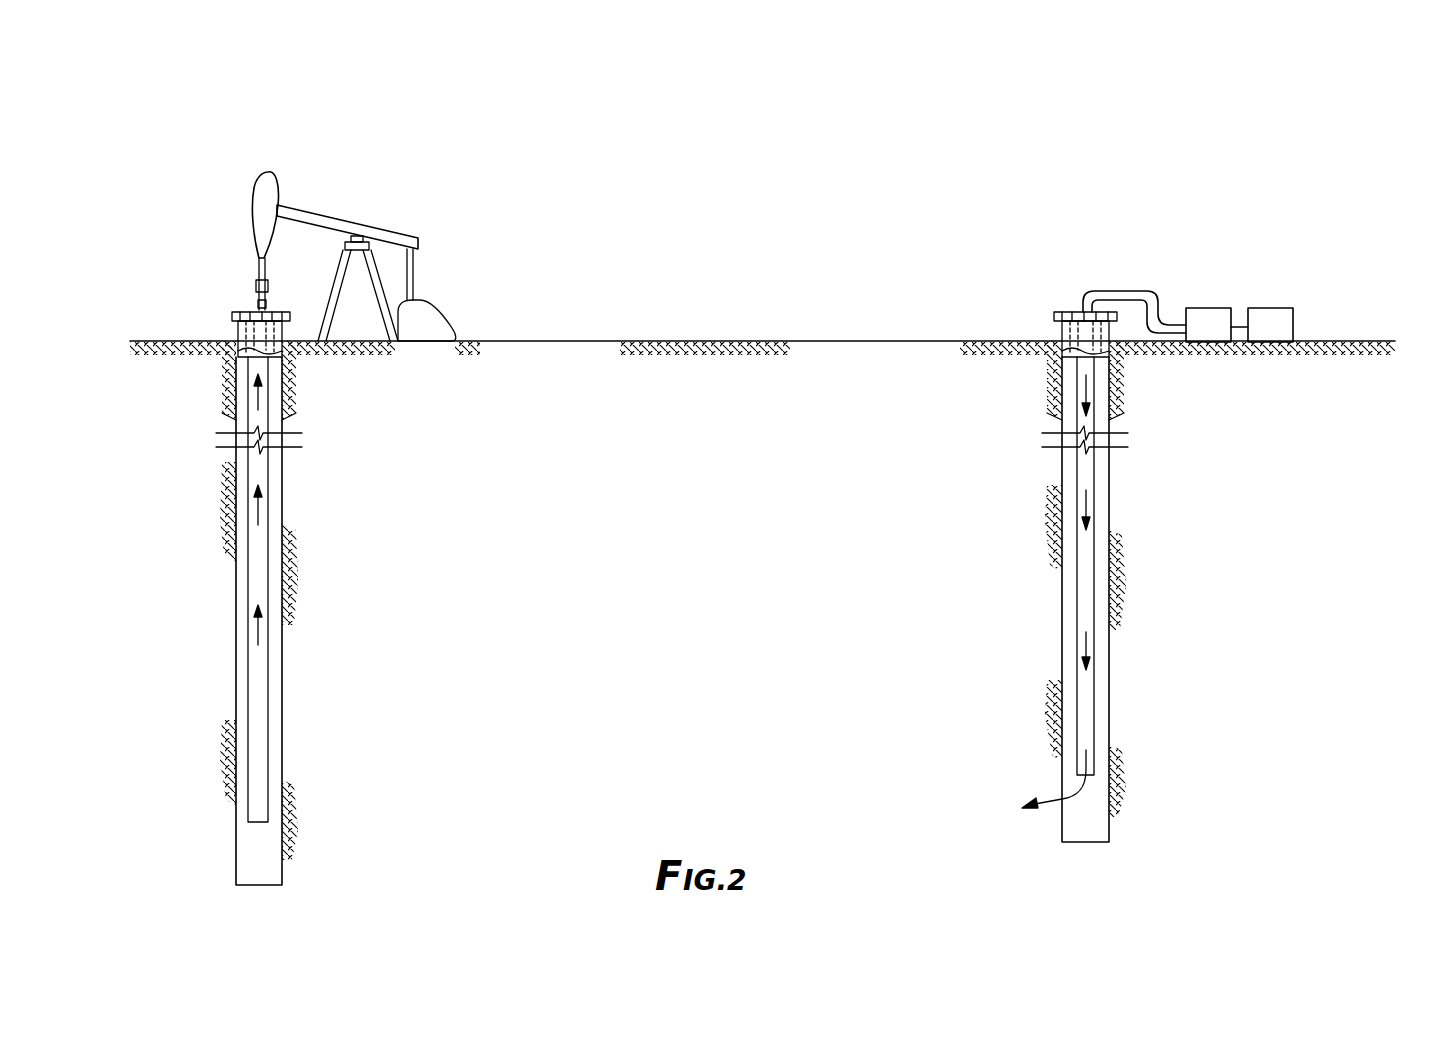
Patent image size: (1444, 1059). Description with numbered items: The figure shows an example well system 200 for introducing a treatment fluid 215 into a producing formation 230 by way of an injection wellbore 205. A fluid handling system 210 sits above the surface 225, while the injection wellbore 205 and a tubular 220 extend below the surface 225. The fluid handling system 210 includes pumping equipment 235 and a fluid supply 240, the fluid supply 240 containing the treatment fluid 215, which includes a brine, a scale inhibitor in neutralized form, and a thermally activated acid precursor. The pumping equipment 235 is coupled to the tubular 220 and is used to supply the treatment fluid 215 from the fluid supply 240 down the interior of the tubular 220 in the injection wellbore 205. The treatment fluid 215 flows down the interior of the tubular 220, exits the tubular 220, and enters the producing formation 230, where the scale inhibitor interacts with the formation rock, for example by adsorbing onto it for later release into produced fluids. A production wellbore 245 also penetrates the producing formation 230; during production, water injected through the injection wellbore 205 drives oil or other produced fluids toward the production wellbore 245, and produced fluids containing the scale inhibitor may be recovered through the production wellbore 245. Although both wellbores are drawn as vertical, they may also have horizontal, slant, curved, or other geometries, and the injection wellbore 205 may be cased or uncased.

The well system 200 is at (1046, 98).
The injection wellbore 205 is at (1061, 487).
The fluid handling system 210 is at (1225, 257).
The treatment fluid 215 is at (1088, 388).
The tubular 220 is at (1076, 574).
The surface 225 is at (1355, 341).
The producing formation 230 is at (694, 694).
The pumping equipment 235 is at (1218, 308).
The fluid supply 240 is at (1278, 308).
The production wellbore 245 is at (236, 620).